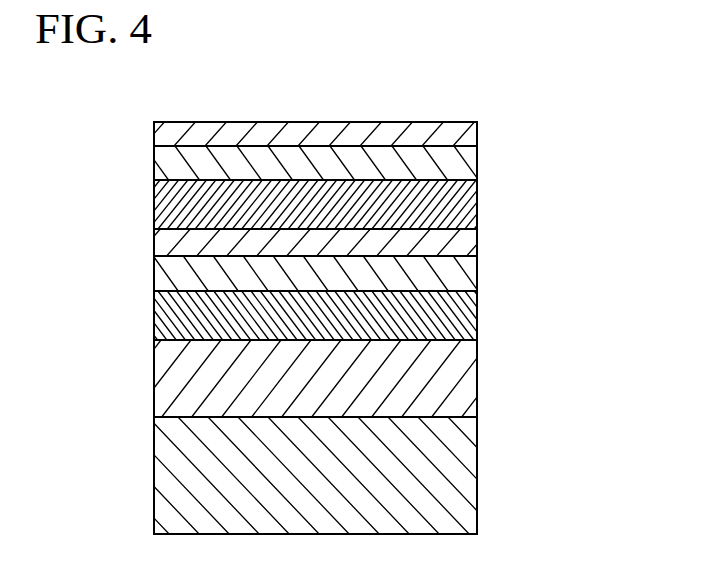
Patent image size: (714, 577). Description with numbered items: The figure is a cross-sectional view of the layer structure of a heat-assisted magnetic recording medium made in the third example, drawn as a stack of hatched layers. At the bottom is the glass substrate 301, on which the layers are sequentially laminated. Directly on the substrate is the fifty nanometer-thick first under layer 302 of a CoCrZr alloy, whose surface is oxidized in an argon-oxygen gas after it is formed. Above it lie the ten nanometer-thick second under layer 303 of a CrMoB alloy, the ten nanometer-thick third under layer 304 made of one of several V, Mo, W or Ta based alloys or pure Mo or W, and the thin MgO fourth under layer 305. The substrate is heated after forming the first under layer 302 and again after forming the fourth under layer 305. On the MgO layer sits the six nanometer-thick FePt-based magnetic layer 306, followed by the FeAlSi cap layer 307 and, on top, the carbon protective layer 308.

The protective layer 308 is at (471, 135).
The cap layer 307 is at (471, 164).
The magnetic layer 306 is at (471, 206).
The fourth under layer 305 is at (471, 244).
The third under layer 304 is at (471, 274).
The second under layer 303 is at (471, 314).
The first under layer 302 is at (471, 378).
The glass substrate 301 is at (471, 476).